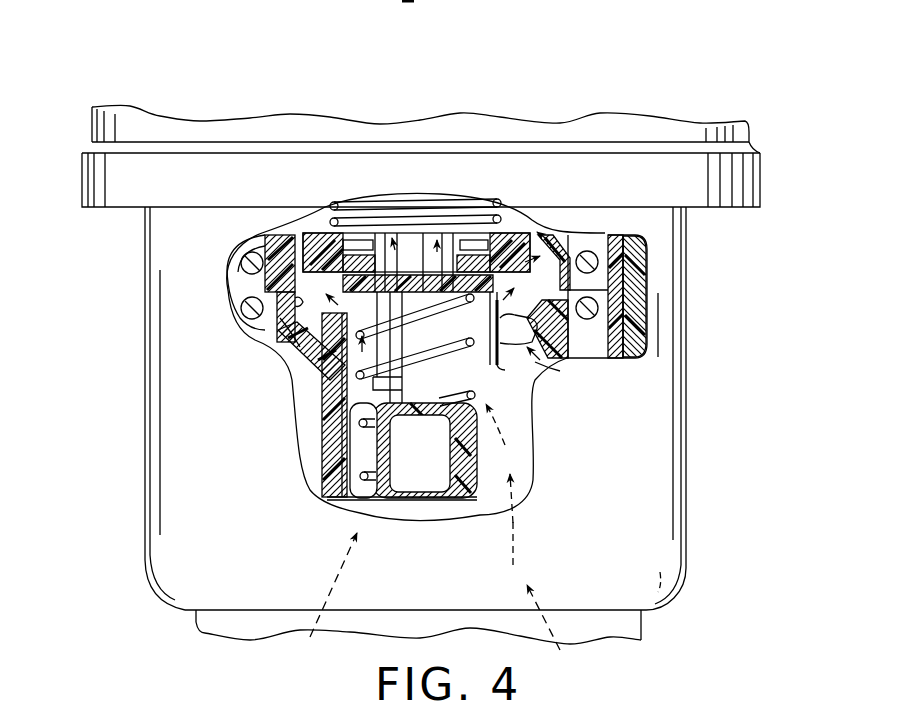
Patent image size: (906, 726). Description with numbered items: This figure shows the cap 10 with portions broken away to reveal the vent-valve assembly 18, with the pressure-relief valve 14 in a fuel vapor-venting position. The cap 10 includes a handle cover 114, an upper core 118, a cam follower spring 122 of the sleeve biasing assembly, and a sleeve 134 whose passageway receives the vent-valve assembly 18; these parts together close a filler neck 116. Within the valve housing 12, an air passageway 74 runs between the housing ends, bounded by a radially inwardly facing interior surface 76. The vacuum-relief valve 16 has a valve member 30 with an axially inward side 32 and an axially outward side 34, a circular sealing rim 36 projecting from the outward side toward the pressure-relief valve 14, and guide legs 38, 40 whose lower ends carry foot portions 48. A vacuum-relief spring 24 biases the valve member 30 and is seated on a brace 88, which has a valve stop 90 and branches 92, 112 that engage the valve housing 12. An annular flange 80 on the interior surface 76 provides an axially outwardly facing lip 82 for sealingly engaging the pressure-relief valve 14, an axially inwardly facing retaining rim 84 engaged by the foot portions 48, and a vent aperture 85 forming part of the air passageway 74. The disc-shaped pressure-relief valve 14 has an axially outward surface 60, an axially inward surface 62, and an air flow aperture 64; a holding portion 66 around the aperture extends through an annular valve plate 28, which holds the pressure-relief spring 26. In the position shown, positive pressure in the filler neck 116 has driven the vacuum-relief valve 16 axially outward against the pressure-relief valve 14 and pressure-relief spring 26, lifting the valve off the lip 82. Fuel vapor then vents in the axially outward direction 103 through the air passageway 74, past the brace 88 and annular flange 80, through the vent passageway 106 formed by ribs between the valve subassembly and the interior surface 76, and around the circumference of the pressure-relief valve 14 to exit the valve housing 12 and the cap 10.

The cap 10 is at (104, 96).
The valve housing 12 is at (262, 327).
The pressure-relief valve 14 is at (618, 250).
The vacuum-relief valve 16 is at (518, 243).
The vent-valve assembly 18 is at (336, 515).
The vacuum-relief spring 24 is at (360, 480).
The pressure-relief spring 26 is at (355, 228).
The annular valve plate 28 is at (272, 240).
The valve member 30 is at (426, 233).
The axially inward side 32 is at (415, 350).
The axially outward side 34 is at (378, 240).
The circular sealing rim 36 is at (378, 233).
The guide leg 38 is at (488, 337).
The guide leg 40 is at (400, 450).
The foot portion 48 is at (515, 395).
The axially outward surface 60 is at (540, 255).
The axially inward surface 62 is at (252, 263).
The air flow aperture 64 is at (440, 248).
The holding portion 66 is at (468, 228).
The air passageway 74 is at (493, 490).
The radially inwardly facing interior surface 76 is at (300, 293).
The annular flange 80 is at (529, 350).
The axially outwardly facing lip 82 is at (293, 320).
The axially inwardly facing retaining rim 84 is at (537, 360).
The vent aperture 85 is at (347, 371).
The brace 88 is at (300, 395).
The valve stop 90 is at (347, 417).
The branch 92 is at (330, 447).
The axially outward direction 103 is at (513, 532).
The vent passageway 106 is at (545, 230).
The branch 112 is at (397, 386).
The handle cover 114 is at (752, 172).
The filler neck 116 is at (152, 396).
The upper core 118 is at (582, 233).
The cam follower spring 122 is at (622, 308).
The sleeve 134 is at (618, 275).